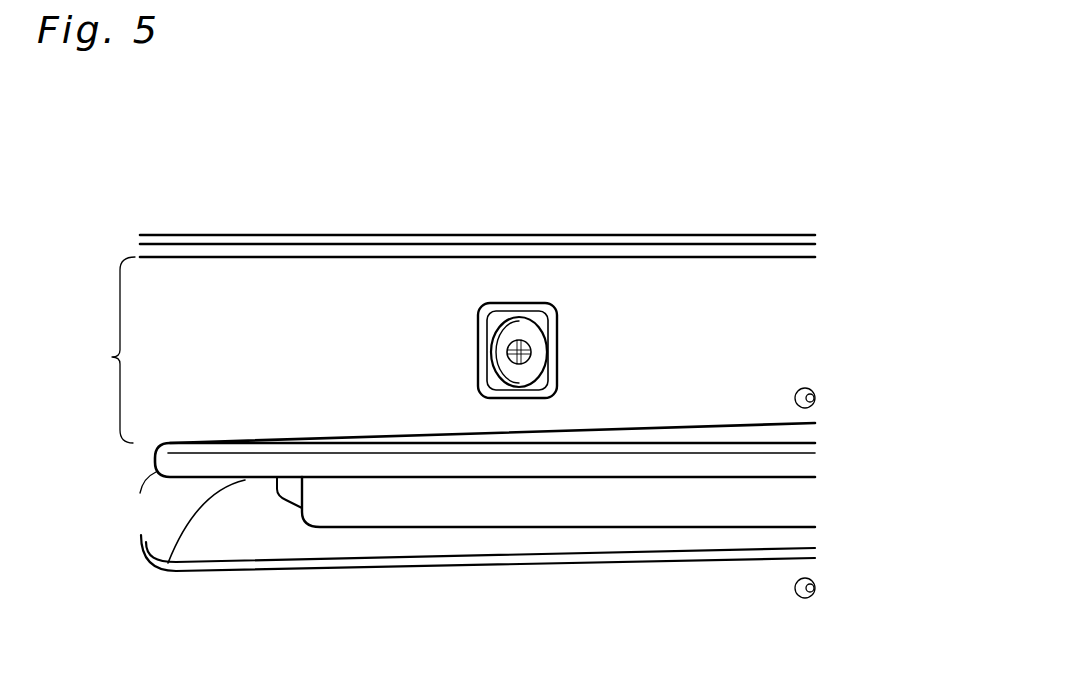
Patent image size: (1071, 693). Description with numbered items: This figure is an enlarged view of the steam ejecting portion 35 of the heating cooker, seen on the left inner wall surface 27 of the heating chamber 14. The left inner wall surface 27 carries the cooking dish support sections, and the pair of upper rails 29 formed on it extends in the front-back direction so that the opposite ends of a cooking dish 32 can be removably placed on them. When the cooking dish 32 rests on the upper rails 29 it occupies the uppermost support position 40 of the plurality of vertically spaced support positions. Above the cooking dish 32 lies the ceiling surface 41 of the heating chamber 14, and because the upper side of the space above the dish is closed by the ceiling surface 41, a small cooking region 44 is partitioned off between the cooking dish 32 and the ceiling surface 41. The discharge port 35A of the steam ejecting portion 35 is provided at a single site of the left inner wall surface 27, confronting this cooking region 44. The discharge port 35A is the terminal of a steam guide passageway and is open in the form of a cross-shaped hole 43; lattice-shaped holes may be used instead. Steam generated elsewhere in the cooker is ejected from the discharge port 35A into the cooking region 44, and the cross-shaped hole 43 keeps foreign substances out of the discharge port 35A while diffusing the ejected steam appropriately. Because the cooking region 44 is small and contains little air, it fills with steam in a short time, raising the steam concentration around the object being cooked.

The heating chamber 14 is at (215, 280).
The left inner wall surface 27 is at (310, 300).
The upper rails 29 is at (242, 535).
The cooking dish 32 is at (746, 423).
The steam ejecting portion 35 is at (544, 292).
The discharge port 35A is at (510, 340).
The uppermost support position 40 is at (138, 464).
The ceiling surface 41 is at (690, 258).
The cross-shaped hole 43 is at (550, 365).
The cooking region 44 is at (107, 350).